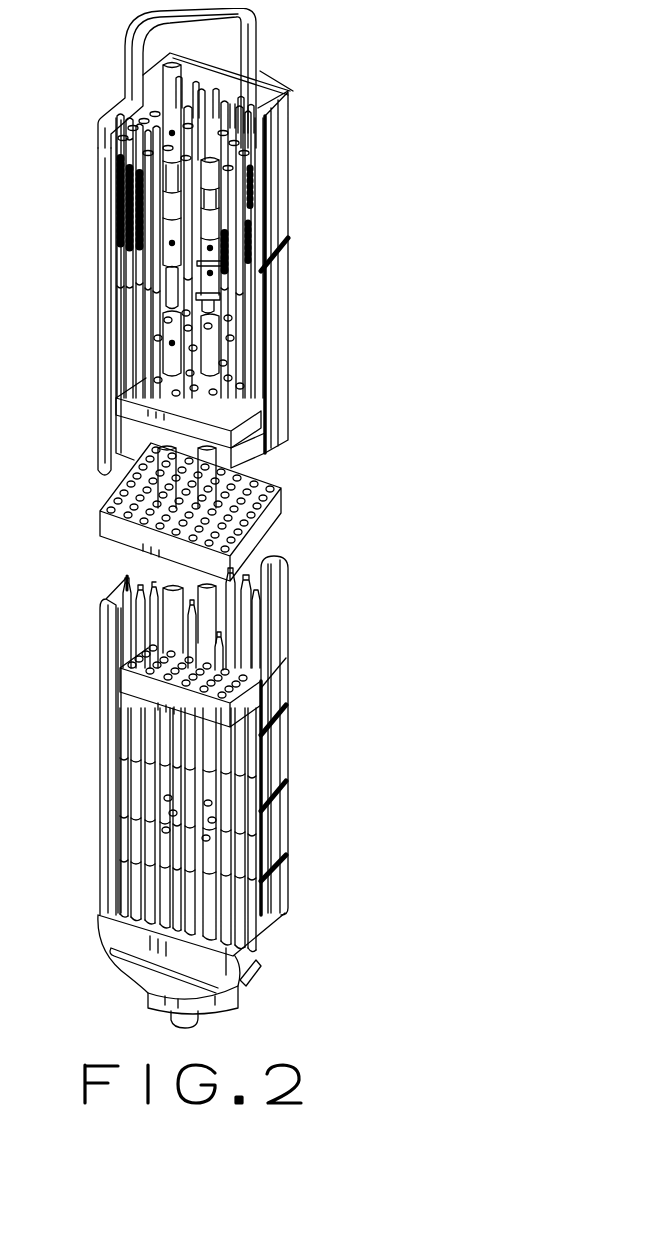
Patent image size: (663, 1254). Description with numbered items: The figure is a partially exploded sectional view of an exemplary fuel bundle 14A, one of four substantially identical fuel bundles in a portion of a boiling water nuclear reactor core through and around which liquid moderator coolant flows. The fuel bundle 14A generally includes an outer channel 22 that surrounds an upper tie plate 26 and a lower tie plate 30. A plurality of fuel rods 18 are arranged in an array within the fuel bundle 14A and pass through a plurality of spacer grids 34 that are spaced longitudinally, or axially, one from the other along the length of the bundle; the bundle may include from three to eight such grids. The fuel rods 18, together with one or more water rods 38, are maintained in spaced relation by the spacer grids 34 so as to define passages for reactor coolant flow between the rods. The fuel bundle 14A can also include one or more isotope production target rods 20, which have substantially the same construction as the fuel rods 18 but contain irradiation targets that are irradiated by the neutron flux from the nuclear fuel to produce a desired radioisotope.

The fuel bundle assembly 14A is at (208, 518).
The fuel rods 18 is at (130, 303).
The isotope production target rods 20 is at (112, 250).
The outer channel 22 is at (267, 357).
The upper tie plate 26 is at (127, 179).
The lower tie plate 30 is at (237, 965).
The spacer grids 34 is at (117, 407).
The water rods 38 is at (92, 499).